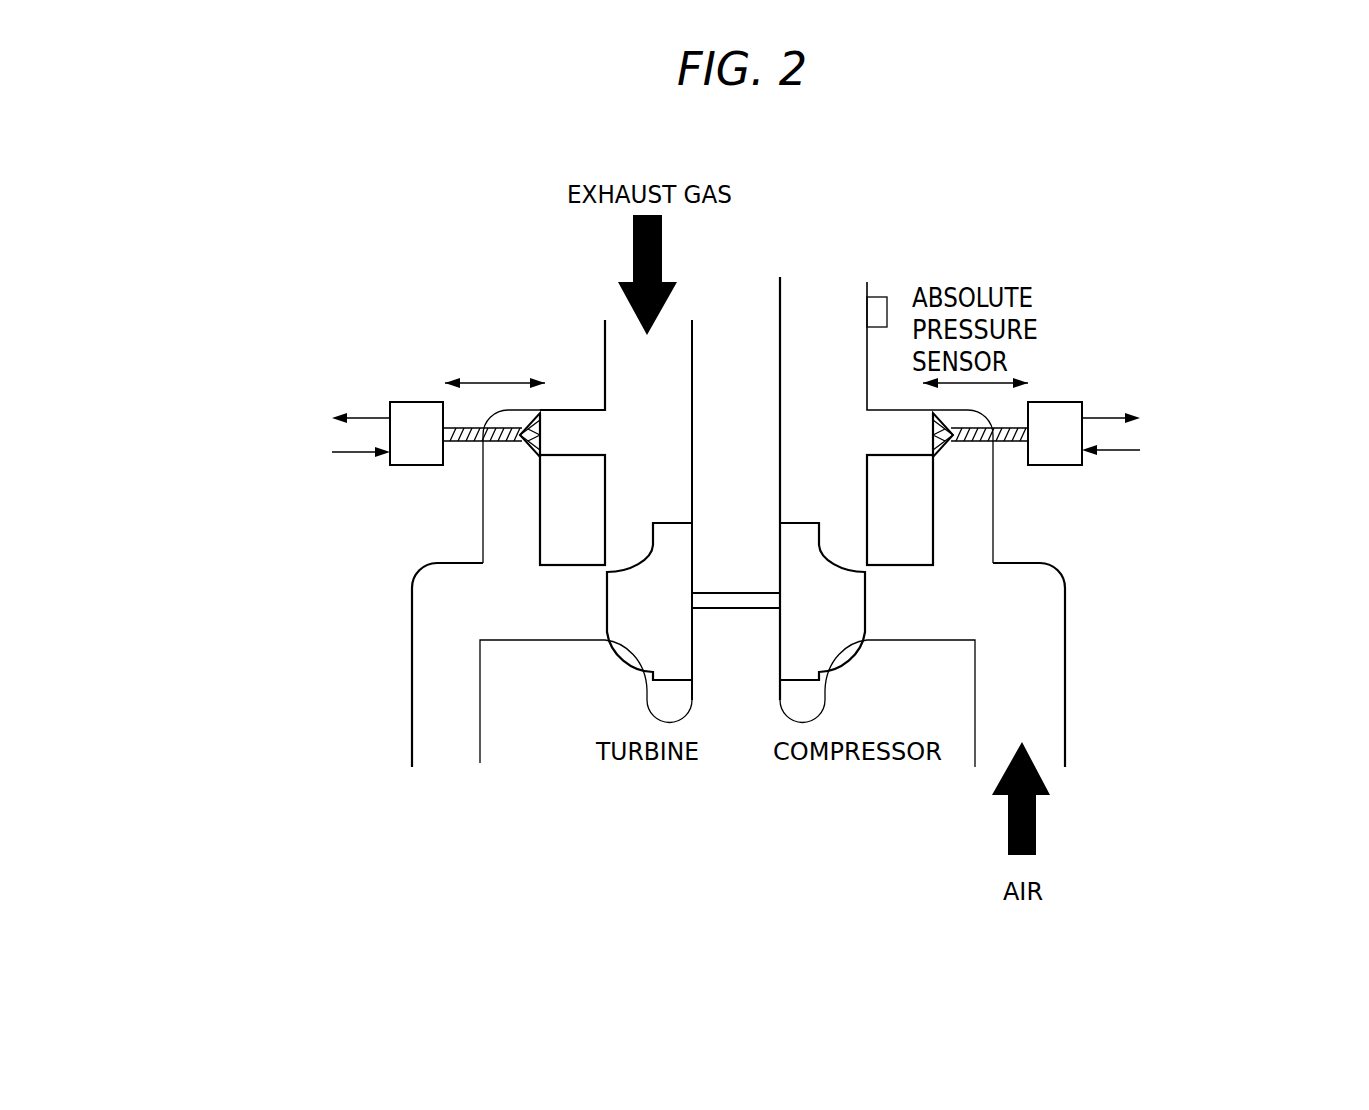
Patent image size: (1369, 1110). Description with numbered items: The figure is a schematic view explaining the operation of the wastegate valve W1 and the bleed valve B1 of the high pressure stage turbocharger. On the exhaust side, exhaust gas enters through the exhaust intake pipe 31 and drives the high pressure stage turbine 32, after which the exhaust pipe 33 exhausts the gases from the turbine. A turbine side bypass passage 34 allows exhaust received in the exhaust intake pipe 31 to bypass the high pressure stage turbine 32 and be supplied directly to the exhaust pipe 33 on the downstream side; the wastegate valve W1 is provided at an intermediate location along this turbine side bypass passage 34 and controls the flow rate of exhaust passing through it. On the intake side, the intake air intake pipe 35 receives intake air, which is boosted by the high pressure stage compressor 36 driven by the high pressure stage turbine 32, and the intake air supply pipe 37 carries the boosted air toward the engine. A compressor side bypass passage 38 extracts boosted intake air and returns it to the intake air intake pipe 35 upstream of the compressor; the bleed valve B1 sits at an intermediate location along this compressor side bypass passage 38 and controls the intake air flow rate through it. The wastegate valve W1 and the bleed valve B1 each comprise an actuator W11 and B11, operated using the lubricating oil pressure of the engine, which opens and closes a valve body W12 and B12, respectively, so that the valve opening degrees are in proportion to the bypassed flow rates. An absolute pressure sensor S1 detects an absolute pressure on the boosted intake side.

The exhaust intake pipe 31 is at (668, 397).
The high pressure stage turbine 32 is at (656, 550).
The exhaust pipe 33 is at (513, 610).
The turbine side bypass passage 34 is at (497, 538).
The intake air intake pipe 35 is at (1042, 673).
The high pressure stage compressor 36 is at (815, 545).
The intake air supply pipe 37 is at (790, 340).
The compressor side bypass passage 38 is at (972, 518).
The wastegate valve W1 is at (397, 418).
The actuator W11 is at (422, 458).
The valve body W12 is at (541, 430).
The bleed valve B1 is at (1087, 411).
The actuator B11 is at (1050, 450).
The valve body B12 is at (933, 430).
The pressure sensor S1 is at (887, 308).